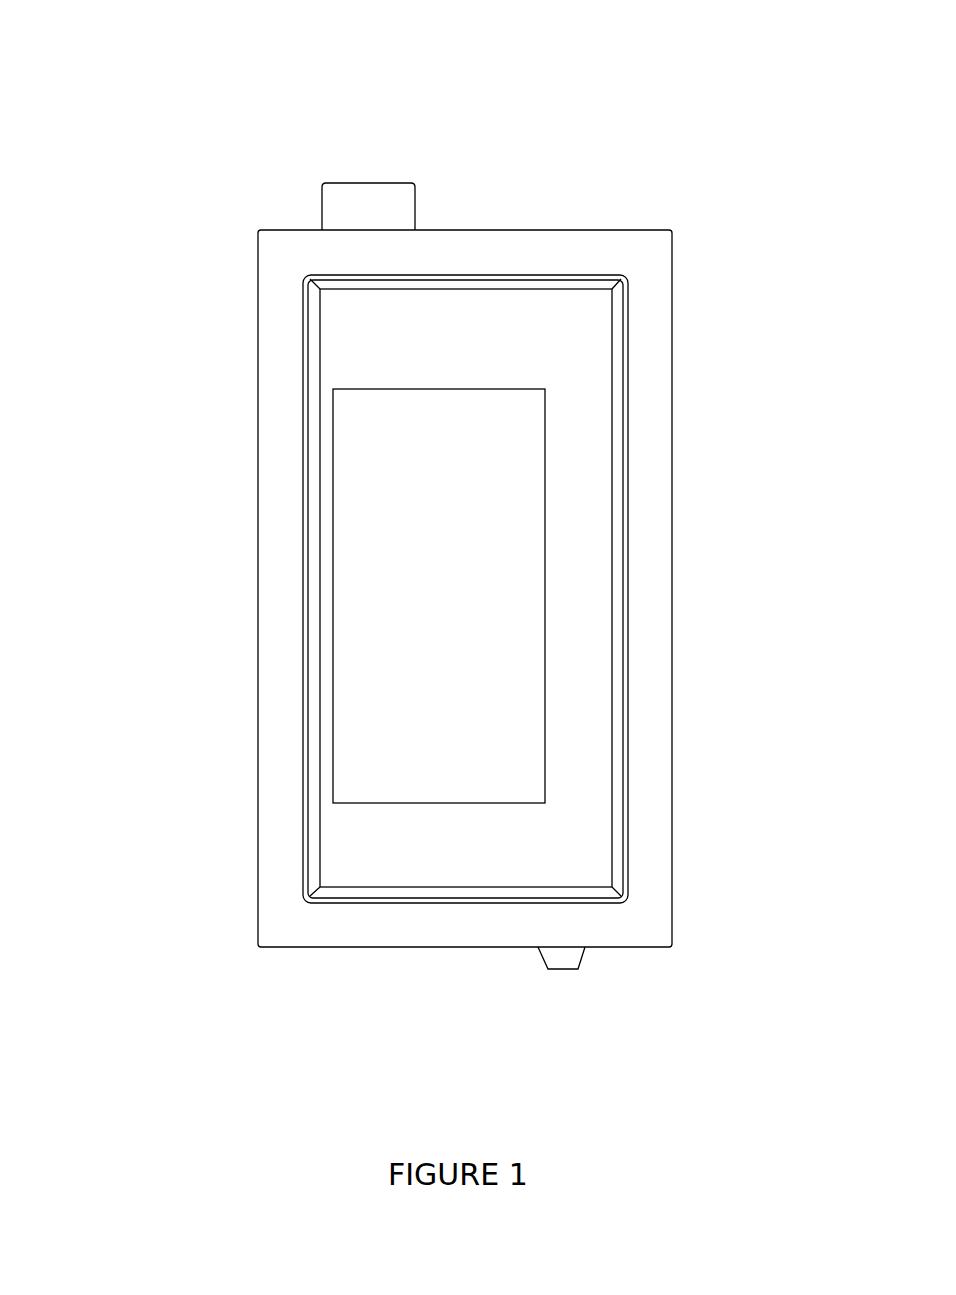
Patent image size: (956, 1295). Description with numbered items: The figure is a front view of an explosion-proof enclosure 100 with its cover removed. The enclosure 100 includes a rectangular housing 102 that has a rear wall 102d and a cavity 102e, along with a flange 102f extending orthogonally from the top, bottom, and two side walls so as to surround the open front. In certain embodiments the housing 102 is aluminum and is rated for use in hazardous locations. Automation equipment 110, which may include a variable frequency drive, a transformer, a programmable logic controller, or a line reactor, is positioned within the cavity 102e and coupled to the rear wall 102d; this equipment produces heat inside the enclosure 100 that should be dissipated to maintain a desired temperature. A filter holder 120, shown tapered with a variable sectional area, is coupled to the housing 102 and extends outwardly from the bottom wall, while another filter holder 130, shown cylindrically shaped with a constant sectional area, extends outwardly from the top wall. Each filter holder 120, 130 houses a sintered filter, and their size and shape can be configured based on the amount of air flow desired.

The explosion-proof enclosure 100 is at (157, 93).
The housing 102 is at (257, 280).
The rear wall 102d is at (545, 848).
The cavity 102e is at (545, 340).
The flange 102f is at (645, 482).
The automation equipment 110 is at (503, 638).
The filter holder 120 is at (558, 958).
The filter holder 130 is at (394, 210).